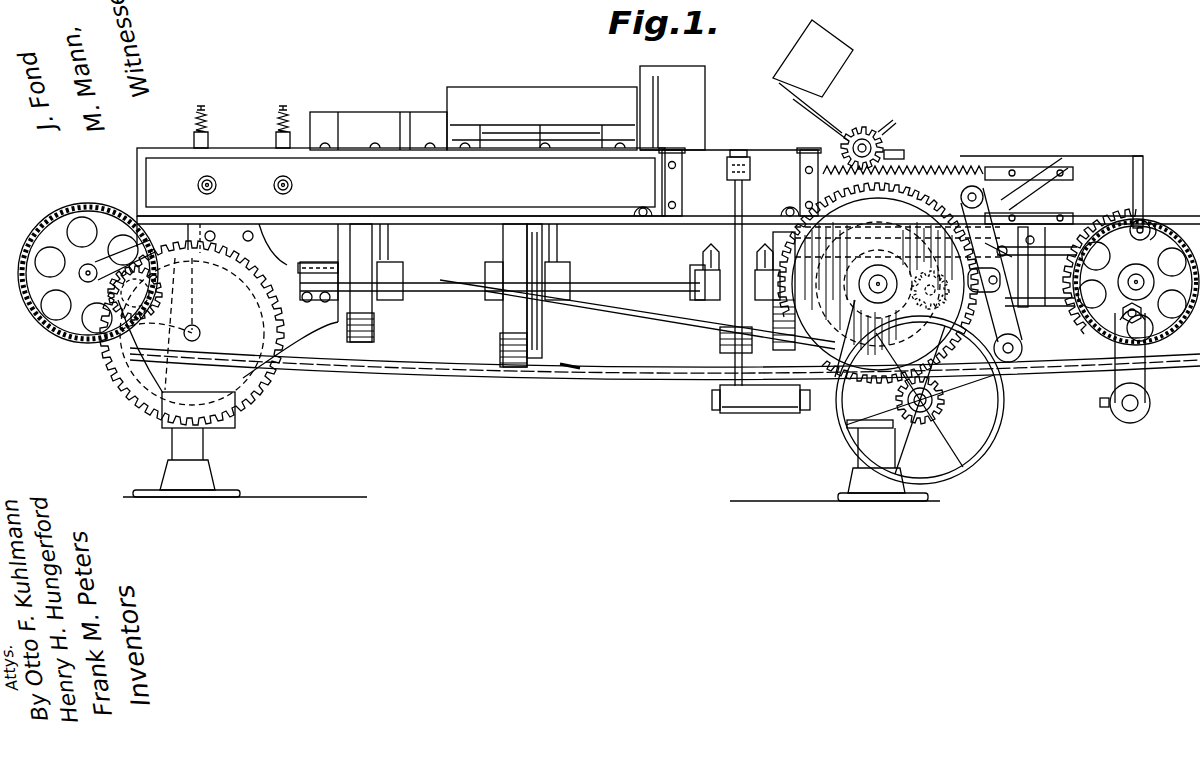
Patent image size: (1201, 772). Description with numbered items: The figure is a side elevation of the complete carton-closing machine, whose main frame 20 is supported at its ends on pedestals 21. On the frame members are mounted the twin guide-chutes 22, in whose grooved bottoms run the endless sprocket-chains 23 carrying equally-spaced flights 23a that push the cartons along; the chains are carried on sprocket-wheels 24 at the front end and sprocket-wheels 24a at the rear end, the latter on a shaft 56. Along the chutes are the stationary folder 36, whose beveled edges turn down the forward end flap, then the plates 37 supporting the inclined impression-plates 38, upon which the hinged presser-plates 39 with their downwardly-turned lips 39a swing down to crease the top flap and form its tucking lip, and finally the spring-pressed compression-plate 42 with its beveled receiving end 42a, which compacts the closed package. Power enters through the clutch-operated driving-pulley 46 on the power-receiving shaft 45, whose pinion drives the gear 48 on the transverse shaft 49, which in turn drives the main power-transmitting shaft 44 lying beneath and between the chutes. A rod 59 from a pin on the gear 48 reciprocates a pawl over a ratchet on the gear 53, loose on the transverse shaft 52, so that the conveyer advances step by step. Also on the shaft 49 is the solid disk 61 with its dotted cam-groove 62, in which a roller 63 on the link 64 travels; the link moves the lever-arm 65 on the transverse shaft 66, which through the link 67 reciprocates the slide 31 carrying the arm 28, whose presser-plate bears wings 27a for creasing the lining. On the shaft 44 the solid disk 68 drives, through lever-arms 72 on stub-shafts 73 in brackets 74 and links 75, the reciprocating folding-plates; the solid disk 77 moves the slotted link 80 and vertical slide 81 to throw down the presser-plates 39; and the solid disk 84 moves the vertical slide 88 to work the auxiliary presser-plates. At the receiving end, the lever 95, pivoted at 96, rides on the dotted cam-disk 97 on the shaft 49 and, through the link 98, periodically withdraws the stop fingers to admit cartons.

The main frame 20 is at (258, 227).
The pedestal 21 is at (203, 443).
The guide-chute 22 is at (401, 182).
The endless sprocket-chain 23 is at (427, 367).
The flight 23a is at (562, 373).
The sprocket-wheel 24 is at (1131, 277).
The sprocket-wheel 24a is at (105, 218).
The wing 27a is at (813, 58).
The arm 28 is at (796, 90).
The slide 31 is at (985, 243).
The stationary folder 36 is at (667, 110).
The plate 37 is at (568, 147).
The impression-plate 38 is at (525, 125).
The presser-plate 39 is at (543, 118).
The lip or flange 39a is at (457, 87).
The compression-plate 42 is at (240, 148).
The bevel 42a is at (302, 142).
The main power-transmitting shaft 44 is at (630, 281).
The power-receiving shaft 45 is at (950, 412).
The driving-pulley 46 is at (1000, 457).
The gear 48 is at (780, 289).
The transverse shaft 49 is at (836, 377).
The transverse shaft 52 is at (196, 332).
The gear 53 is at (134, 406).
The shaft 56 is at (147, 247).
The rod 59 is at (641, 315).
The solid disk 61 is at (813, 230).
The cam-groove 62 is at (892, 245).
The roller 63 is at (942, 240).
The link 64 is at (990, 250).
The lever-arm 65 is at (993, 257).
The transverse shaft 66 is at (1011, 355).
The link 67 is at (926, 245).
The solid disk 68 is at (720, 333).
The lever-arm 72 is at (737, 230).
The stub-shaft 73 is at (720, 397).
The bracket 74 is at (775, 410).
The link 75 is at (740, 157).
The solid disk 77 is at (510, 313).
The slotted link 80 is at (542, 334).
The vertical slide 81 is at (565, 240).
The solid disk 84 is at (374, 333).
The vertical slide 88 is at (390, 240).
The lever 95 is at (1049, 250).
The pivot 96 is at (1007, 250).
The cam-disk 97 is at (937, 293).
The link 98 is at (1146, 218).